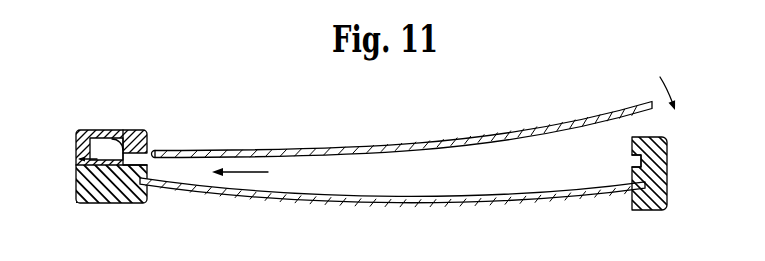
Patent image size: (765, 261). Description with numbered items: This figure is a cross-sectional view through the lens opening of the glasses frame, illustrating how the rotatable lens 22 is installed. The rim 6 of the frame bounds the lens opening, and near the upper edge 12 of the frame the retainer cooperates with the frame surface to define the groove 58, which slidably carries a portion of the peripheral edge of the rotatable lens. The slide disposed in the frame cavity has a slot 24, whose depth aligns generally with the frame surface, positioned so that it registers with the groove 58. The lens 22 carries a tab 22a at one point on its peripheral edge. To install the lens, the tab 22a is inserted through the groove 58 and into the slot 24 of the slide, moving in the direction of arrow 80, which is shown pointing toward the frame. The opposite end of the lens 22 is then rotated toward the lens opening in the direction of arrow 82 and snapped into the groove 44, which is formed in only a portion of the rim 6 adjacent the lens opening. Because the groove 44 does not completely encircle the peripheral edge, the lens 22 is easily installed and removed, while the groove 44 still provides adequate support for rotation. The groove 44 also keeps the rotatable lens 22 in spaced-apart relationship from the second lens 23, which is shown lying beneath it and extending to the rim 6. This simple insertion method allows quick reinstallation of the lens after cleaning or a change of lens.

The rim 6 is at (660, 178).
The upper edge 12 is at (76, 177).
The lens 22 is at (268, 150).
The tab 22a is at (156, 149).
The lens 23 is at (310, 203).
The slot 24 is at (82, 140).
The groove 44 is at (650, 163).
The groove 58 is at (113, 140).
The arrow 80 is at (257, 176).
The arrow 82 is at (665, 80).